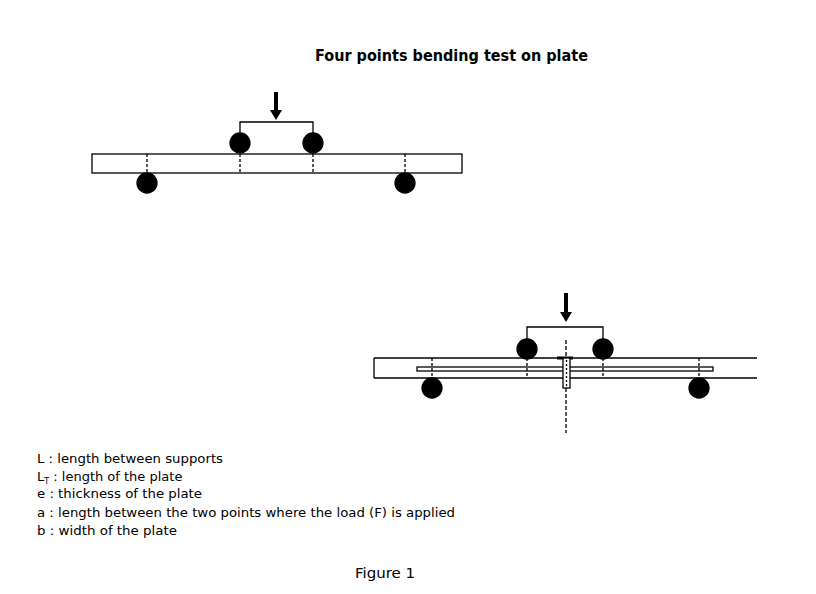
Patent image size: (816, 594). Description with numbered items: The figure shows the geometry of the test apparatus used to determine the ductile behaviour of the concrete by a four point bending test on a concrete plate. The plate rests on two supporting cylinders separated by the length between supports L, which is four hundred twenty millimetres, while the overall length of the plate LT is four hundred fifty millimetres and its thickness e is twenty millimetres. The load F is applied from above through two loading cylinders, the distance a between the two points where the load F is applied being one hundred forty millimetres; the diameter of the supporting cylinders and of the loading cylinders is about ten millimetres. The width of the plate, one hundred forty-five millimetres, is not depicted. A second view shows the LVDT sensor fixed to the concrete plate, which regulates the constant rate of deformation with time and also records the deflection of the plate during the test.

The load F is at (421, 217).
The thickness of plate e is at (92, 154).
The distance between the two load points a is at (313, 173).
The length between supports L is at (406, 207).
The length of plate LT is at (462, 268).
The LVDT sensor LVDT is at (570, 391).